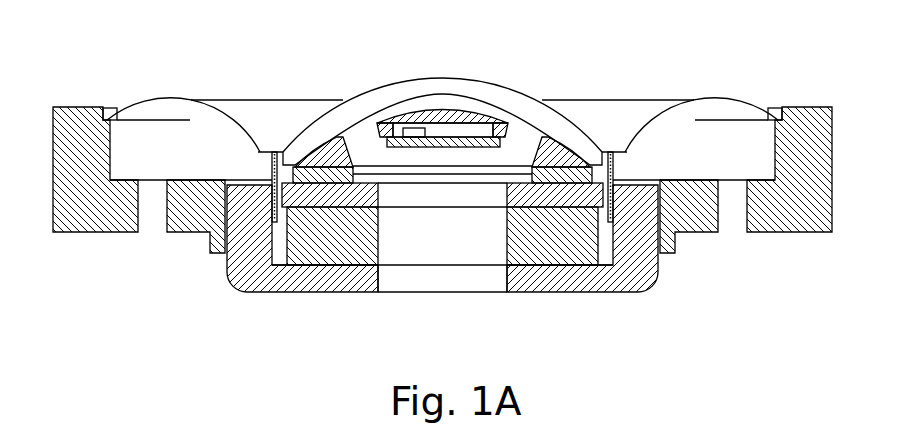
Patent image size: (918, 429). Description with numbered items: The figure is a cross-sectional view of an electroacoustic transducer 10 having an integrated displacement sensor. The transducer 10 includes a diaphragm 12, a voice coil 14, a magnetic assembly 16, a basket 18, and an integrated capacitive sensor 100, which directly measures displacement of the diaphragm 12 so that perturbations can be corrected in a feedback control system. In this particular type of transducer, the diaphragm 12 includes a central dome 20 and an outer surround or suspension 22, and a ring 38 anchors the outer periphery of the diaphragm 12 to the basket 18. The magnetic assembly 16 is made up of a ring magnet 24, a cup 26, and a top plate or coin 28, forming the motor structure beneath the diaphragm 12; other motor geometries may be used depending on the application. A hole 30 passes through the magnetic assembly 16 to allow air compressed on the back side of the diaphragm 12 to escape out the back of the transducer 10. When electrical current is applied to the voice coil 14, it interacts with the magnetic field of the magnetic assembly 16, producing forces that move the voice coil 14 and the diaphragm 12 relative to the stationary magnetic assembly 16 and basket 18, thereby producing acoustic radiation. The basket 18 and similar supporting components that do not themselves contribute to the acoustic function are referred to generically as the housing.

The electroacoustic transducer 10 is at (183, 46).
The diaphragm 12 is at (255, 107).
The voice coil 14 is at (614, 164).
The magnetic assembly 16 is at (583, 301).
The basket 18 is at (92, 212).
The dome 20 is at (458, 80).
The surround or suspension 22 is at (692, 102).
The ring magnet 24 is at (522, 228).
The cup 26 is at (365, 282).
The top plate or coin 28 is at (367, 197).
The hole 30 is at (445, 276).
The ring 38 is at (115, 113).
The integrated capacitive sensor 100 is at (338, 122).